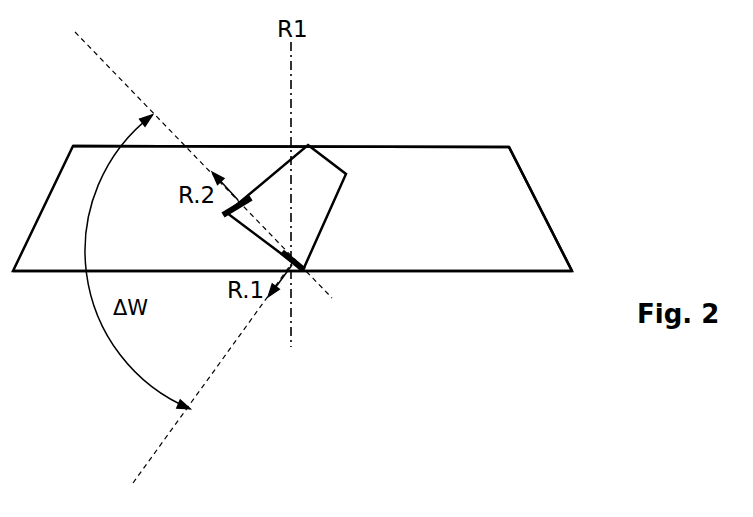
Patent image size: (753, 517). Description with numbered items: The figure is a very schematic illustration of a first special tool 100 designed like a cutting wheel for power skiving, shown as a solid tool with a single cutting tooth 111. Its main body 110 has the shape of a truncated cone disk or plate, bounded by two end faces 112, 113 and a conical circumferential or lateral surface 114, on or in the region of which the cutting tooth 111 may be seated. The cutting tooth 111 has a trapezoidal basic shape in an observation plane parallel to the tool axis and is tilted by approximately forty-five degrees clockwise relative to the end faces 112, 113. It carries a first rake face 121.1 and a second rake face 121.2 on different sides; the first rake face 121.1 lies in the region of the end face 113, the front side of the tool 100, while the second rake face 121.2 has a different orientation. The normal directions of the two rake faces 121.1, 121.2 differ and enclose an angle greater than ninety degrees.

The special tool 100 is at (323, 170).
The main body 110 is at (323, 207).
The cutting tooth 111 is at (294, 223).
The end face 112 is at (456, 146).
The end face 113 is at (468, 272).
The circumferential or lateral surface 114 is at (528, 233).
The first rake face 121.1 is at (298, 272).
The second rake face 121.2 is at (244, 200).